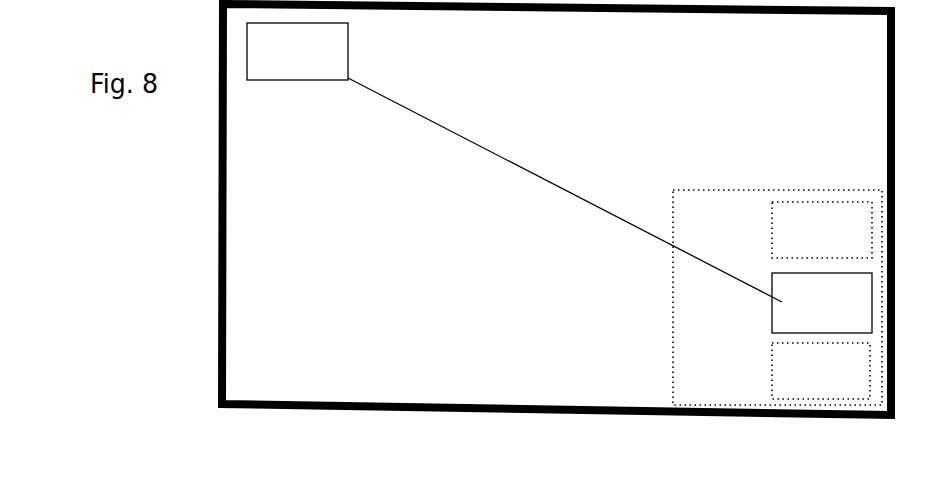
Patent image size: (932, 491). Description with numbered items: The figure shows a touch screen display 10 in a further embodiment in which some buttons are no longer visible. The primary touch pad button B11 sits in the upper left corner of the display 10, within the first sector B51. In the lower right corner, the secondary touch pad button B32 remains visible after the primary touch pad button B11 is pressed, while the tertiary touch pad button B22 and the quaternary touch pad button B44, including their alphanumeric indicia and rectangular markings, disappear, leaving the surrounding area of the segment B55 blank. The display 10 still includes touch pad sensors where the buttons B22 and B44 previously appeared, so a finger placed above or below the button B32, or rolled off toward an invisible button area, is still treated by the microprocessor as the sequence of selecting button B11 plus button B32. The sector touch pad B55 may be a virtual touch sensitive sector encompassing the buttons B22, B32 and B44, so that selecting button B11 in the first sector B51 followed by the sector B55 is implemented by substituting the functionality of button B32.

The touch screen display 10 is at (320, 305).
The first sector B51 is at (302, 126).
The primary touch pad button B11 is at (297, 51).
The tertiary touch pad button B22 is at (697, 250).
The secondary touch pad button B32 is at (822, 303).
The quaternary touch pad button B44 is at (697, 265).
The sector touch pad B55 is at (777, 297).